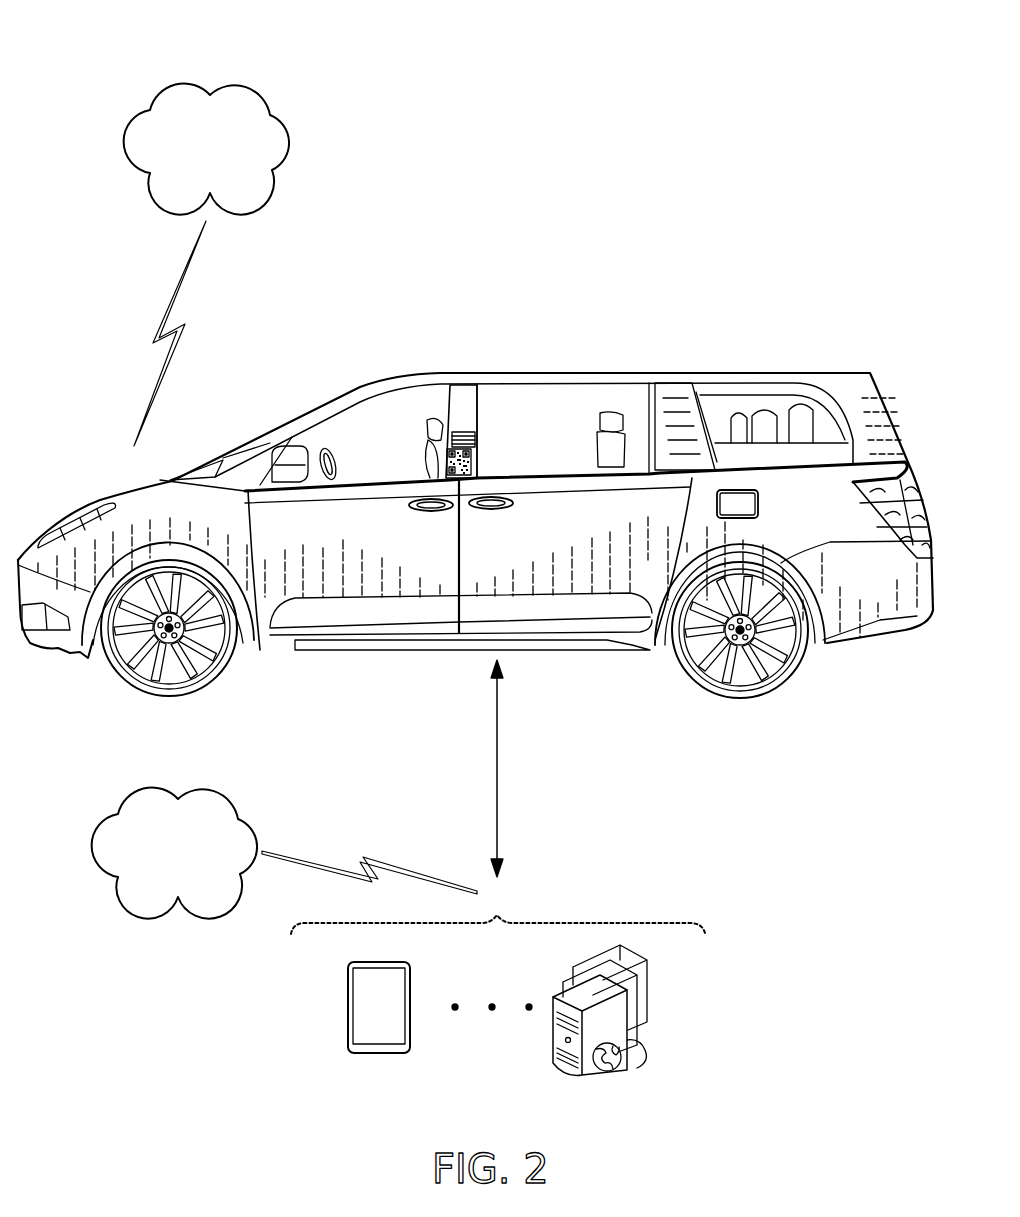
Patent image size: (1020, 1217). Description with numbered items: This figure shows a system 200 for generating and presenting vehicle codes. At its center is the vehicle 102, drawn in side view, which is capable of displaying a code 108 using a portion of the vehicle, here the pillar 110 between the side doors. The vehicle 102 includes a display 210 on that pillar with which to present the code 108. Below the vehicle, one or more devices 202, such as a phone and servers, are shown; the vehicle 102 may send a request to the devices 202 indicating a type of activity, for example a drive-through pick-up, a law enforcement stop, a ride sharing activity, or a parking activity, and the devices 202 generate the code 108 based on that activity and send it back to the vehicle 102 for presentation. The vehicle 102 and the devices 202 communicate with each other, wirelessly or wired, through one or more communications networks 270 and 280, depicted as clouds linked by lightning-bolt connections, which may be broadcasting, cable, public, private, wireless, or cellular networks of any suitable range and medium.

The system environment 200 is at (838, 28).
The vehicle 102 is at (628, 283).
The B-pillar 110 is at (467, 390).
The display 210 is at (470, 433).
The code 108 is at (472, 462).
The communications network 270 is at (206, 264).
The communications network 280 is at (284, 852).
The one or more devices 202 is at (497, 915).